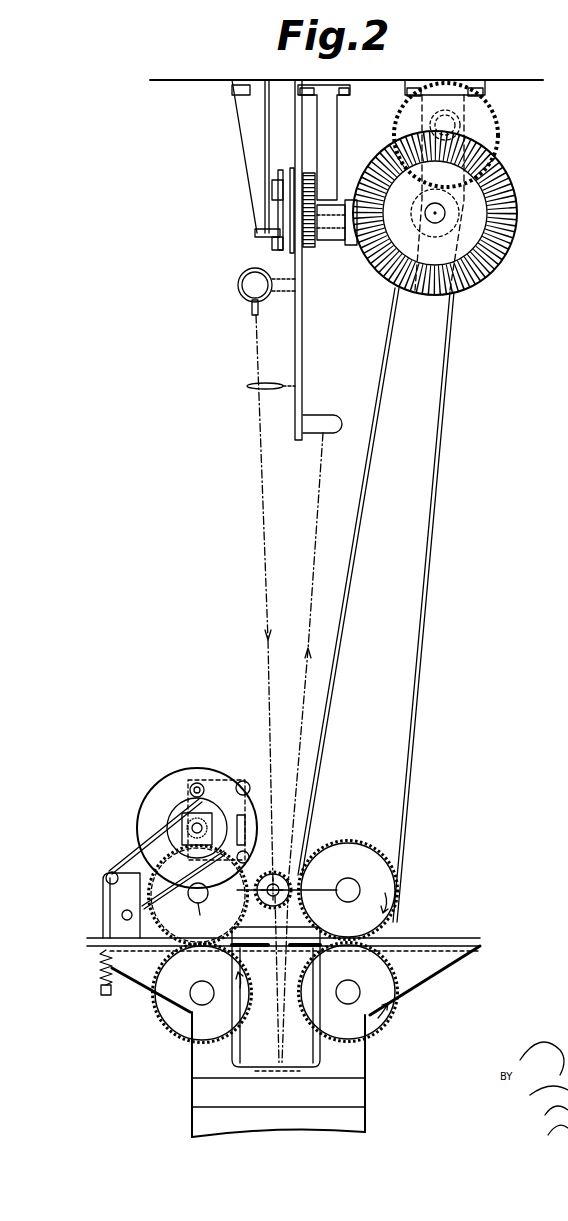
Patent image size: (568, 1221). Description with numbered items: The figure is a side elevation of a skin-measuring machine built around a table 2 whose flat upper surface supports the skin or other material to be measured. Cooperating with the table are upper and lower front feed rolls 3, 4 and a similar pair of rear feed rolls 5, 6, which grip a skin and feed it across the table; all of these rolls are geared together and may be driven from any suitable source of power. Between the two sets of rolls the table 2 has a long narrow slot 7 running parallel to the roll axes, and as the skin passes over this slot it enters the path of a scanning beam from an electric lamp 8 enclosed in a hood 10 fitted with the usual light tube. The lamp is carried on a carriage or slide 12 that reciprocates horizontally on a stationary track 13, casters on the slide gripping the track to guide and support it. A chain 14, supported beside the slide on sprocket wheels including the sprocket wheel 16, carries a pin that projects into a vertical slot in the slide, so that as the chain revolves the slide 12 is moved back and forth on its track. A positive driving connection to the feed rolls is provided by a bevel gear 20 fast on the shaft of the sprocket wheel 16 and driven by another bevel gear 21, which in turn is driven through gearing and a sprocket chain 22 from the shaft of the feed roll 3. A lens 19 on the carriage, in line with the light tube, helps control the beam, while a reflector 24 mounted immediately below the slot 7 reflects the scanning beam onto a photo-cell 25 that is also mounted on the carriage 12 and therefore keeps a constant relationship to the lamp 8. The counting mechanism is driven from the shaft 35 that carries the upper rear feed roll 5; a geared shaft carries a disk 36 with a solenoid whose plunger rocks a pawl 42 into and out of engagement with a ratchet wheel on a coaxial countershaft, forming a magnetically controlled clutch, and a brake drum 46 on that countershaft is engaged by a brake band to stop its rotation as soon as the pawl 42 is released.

The table 2 is at (437, 938).
The upper front feed roll 3 is at (350, 846).
The lower front feed roll 4 is at (388, 1018).
The upper rear feed roll 5 is at (160, 912).
The lower rear feed roll 6 is at (170, 1020).
The slot 7 is at (248, 956).
The electric lamp 8 is at (250, 272).
The hood 10 is at (240, 282).
The carriage or slide 12 is at (302, 357).
The stationary track 13 is at (277, 218).
The chain 14 is at (310, 173).
The sprocket wheel 16 is at (313, 250).
The lens 19 is at (248, 389).
The bevel gear 20 is at (356, 250).
The bevel gear 21 is at (505, 192).
The sprocket chain 22 is at (432, 553).
The reflector 24 is at (255, 1072).
The photo-cell 25 is at (331, 422).
The shaft 35 is at (198, 895).
The disk 36 is at (197, 768).
The pawl 42 is at (120, 853).
The brake drum 46 is at (167, 825).